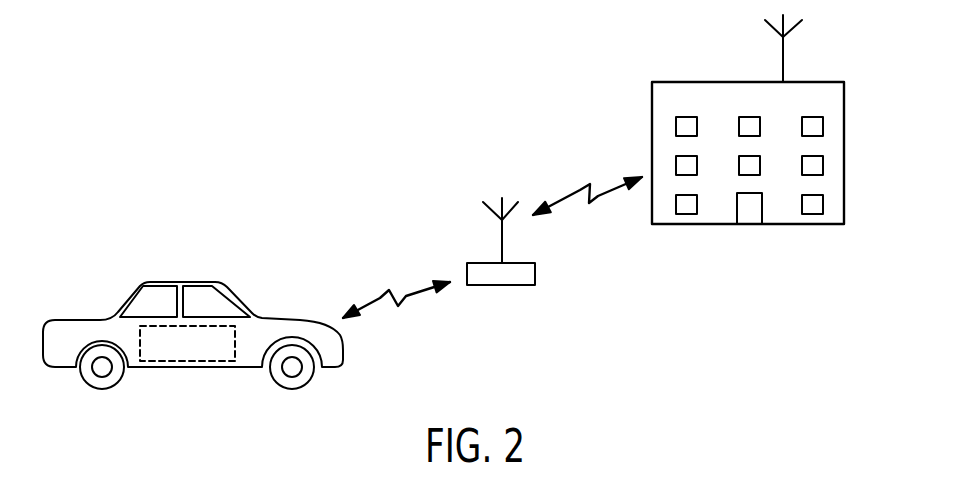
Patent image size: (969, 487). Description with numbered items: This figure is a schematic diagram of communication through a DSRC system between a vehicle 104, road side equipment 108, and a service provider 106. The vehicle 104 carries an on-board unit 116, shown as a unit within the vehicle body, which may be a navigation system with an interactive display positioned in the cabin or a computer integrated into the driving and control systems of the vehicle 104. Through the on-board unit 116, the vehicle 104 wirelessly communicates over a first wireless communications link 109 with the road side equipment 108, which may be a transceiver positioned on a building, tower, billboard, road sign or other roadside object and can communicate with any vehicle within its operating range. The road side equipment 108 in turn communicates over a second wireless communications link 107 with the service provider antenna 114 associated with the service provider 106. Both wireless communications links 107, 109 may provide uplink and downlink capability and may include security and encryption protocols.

The vehicle 104 is at (288, 328).
The on-board unit 116 is at (168, 353).
The first wireless communications link 109 is at (383, 295).
The road side equipment 108 is at (503, 248).
The second wireless communications link 107 is at (577, 190).
The service provider 106 is at (832, 145).
The service provider antenna 114 is at (783, 63).